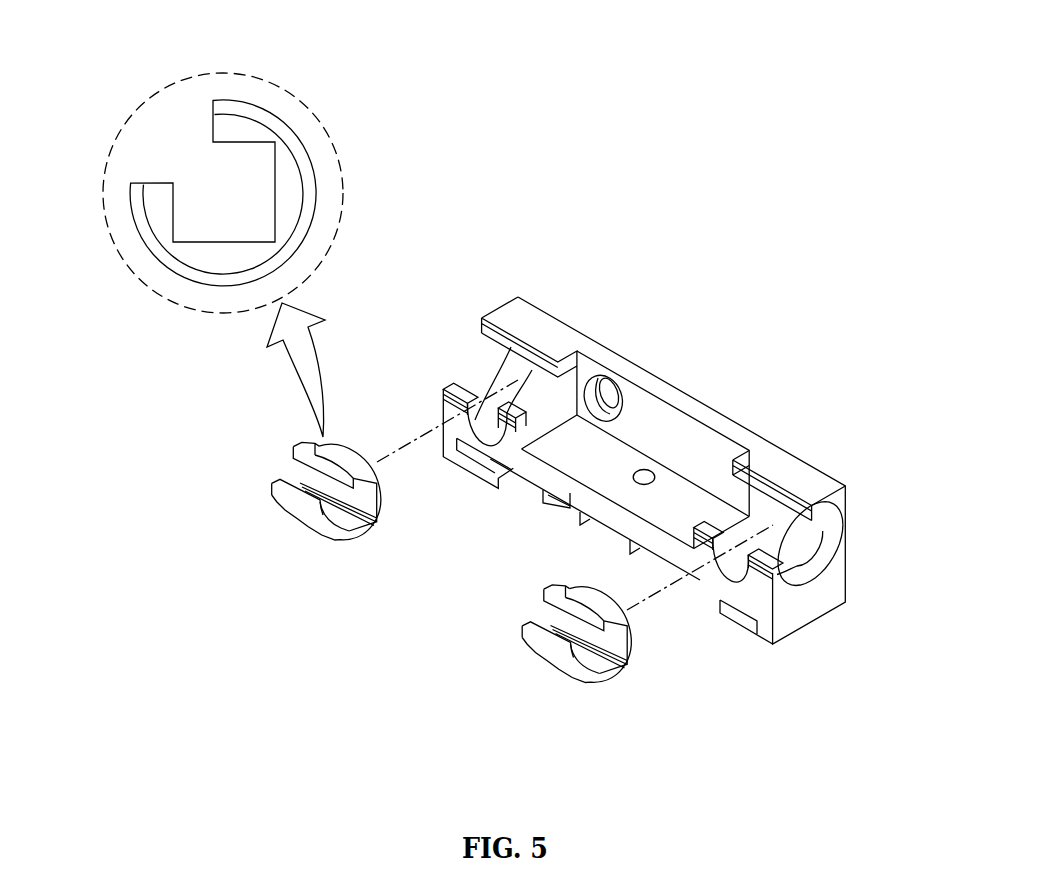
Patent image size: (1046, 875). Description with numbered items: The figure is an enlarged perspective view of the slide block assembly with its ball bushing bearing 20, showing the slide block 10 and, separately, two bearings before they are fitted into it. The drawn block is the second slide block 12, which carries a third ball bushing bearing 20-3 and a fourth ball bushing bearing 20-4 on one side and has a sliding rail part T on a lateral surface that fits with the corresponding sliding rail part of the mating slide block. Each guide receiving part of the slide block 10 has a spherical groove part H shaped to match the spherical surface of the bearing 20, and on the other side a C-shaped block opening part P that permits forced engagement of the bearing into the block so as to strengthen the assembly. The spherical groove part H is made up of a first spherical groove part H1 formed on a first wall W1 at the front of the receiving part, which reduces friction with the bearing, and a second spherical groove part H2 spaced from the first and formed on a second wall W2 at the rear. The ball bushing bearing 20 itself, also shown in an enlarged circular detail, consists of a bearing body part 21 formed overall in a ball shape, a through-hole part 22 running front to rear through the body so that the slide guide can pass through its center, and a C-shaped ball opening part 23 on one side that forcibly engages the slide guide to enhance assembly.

The slide block 10 is at (812, 323).
The second slide block 12 is at (700, 407).
The ball bushing bearing 20 is at (177, 425).
The third ball bushing bearing 20-3 is at (303, 243).
The fourth ball bushing bearing 20-4 is at (557, 667).
The bearing body part 21 is at (303, 138).
The through-hole part 22 is at (203, 168).
The ball opening part 23 is at (212, 110).
The block opening part P is at (487, 344).
The spherical groove part H is at (927, 507).
The first spherical groove part H1 is at (793, 490).
The second spherical groove part H2 is at (810, 553).
The sliding rail part T is at (545, 510).
The first wall W1 is at (672, 560).
The second wall W2 is at (742, 587).